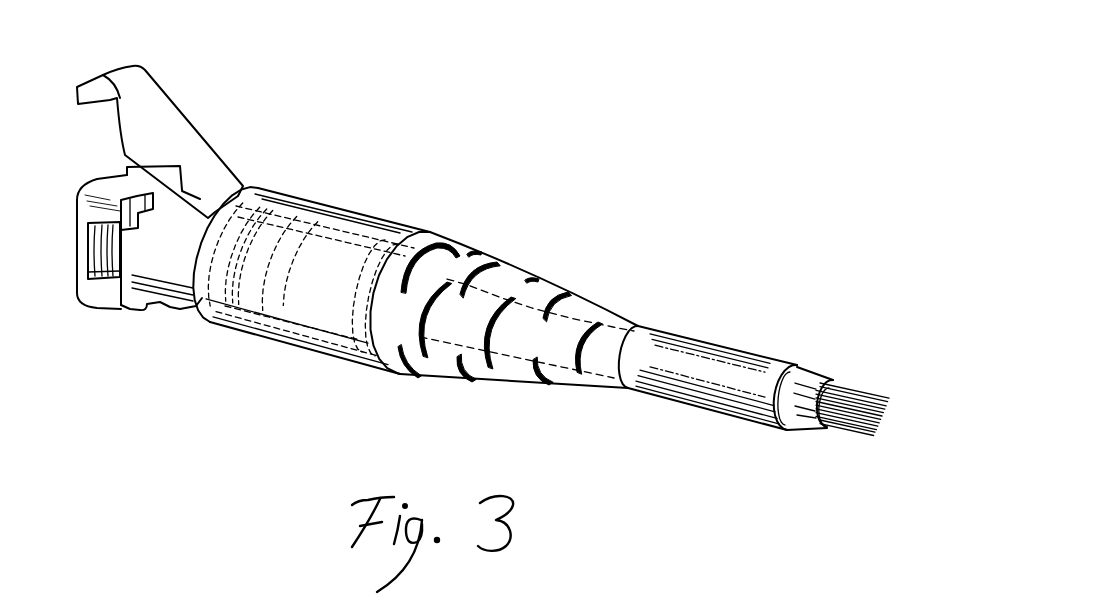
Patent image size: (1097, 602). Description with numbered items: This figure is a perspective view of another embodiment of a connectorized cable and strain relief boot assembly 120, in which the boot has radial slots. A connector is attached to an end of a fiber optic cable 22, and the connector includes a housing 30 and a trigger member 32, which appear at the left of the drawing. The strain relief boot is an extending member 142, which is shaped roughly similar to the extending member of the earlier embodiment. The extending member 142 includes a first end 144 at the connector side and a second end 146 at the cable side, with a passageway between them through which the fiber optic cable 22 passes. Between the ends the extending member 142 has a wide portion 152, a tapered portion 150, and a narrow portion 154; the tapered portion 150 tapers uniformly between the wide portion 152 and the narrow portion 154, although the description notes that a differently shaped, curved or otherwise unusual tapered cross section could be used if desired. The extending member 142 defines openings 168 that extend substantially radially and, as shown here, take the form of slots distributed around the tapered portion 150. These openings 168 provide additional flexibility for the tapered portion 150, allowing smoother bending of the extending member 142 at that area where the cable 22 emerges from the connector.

The optical fiber connector assembly 120 is at (471, 99).
The housing 30 is at (100, 297).
The trigger member 32 is at (182, 298).
The extending member 142 is at (381, 209).
The first end 144 is at (218, 318).
The wide portion 152 is at (272, 340).
The tapered portion 150 is at (461, 378).
The openings 168 is at (567, 290).
The narrow portion 154 is at (705, 410).
The second end 146 is at (787, 432).
The fiber optic cable 22 is at (821, 380).